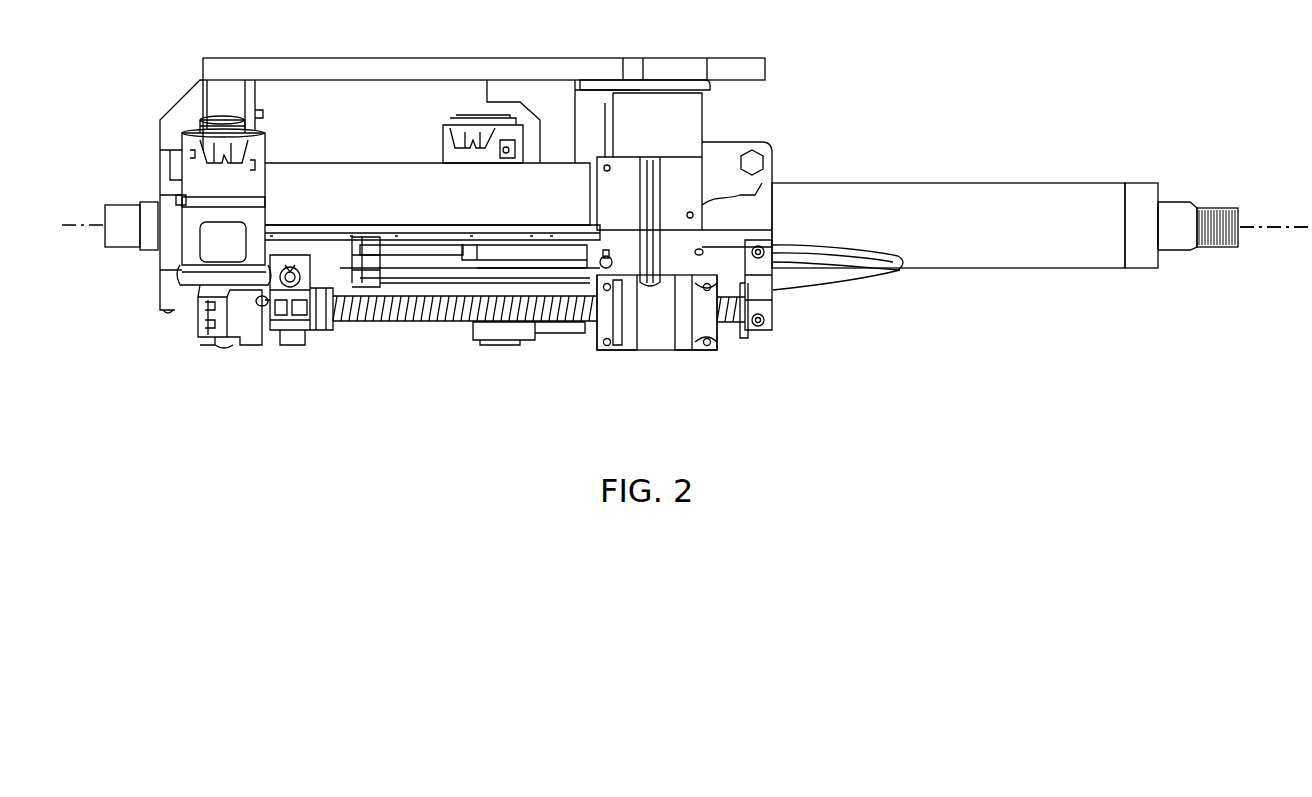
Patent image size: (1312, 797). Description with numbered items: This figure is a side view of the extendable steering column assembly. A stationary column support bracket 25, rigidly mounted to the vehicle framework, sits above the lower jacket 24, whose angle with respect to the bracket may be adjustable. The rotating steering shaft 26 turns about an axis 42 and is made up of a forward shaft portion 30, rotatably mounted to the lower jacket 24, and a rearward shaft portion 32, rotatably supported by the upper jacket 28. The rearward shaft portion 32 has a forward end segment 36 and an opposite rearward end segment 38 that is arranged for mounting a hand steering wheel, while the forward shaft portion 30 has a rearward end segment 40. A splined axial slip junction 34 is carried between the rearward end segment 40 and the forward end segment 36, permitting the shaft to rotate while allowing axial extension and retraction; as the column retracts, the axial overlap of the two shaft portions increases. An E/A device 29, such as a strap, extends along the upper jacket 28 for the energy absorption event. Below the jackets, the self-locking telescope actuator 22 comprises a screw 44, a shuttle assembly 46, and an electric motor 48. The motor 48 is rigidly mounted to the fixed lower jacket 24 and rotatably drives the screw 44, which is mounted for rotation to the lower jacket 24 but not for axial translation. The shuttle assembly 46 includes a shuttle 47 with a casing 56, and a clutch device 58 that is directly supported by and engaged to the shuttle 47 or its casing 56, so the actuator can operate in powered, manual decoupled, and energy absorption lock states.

The self-locking telescope actuator 22 is at (575, 365).
The lower jacket 24 is at (380, 162).
The column support bracket 25 is at (511, 58).
The rotating steering shaft 26 is at (1188, 258).
The upper jacket 28 is at (903, 183).
The E/A device 29 is at (834, 285).
The forward shaft portion 30 is at (130, 202).
The rearward shaft portion 32 is at (1172, 202).
The axial slip junction 34 is at (427, 272).
The forward end segment 36 is at (470, 270).
The rearward end segment 38 is at (1215, 207).
The rearward end segment 40 is at (394, 255).
The axis 42 is at (1262, 231).
The screw 44 is at (372, 320).
The shuttle assembly 46 is at (657, 292).
The shuttle 47 is at (680, 340).
The electric motor 48 is at (268, 148).
The casing 56 is at (628, 340).
The clutch device 58 is at (652, 152).